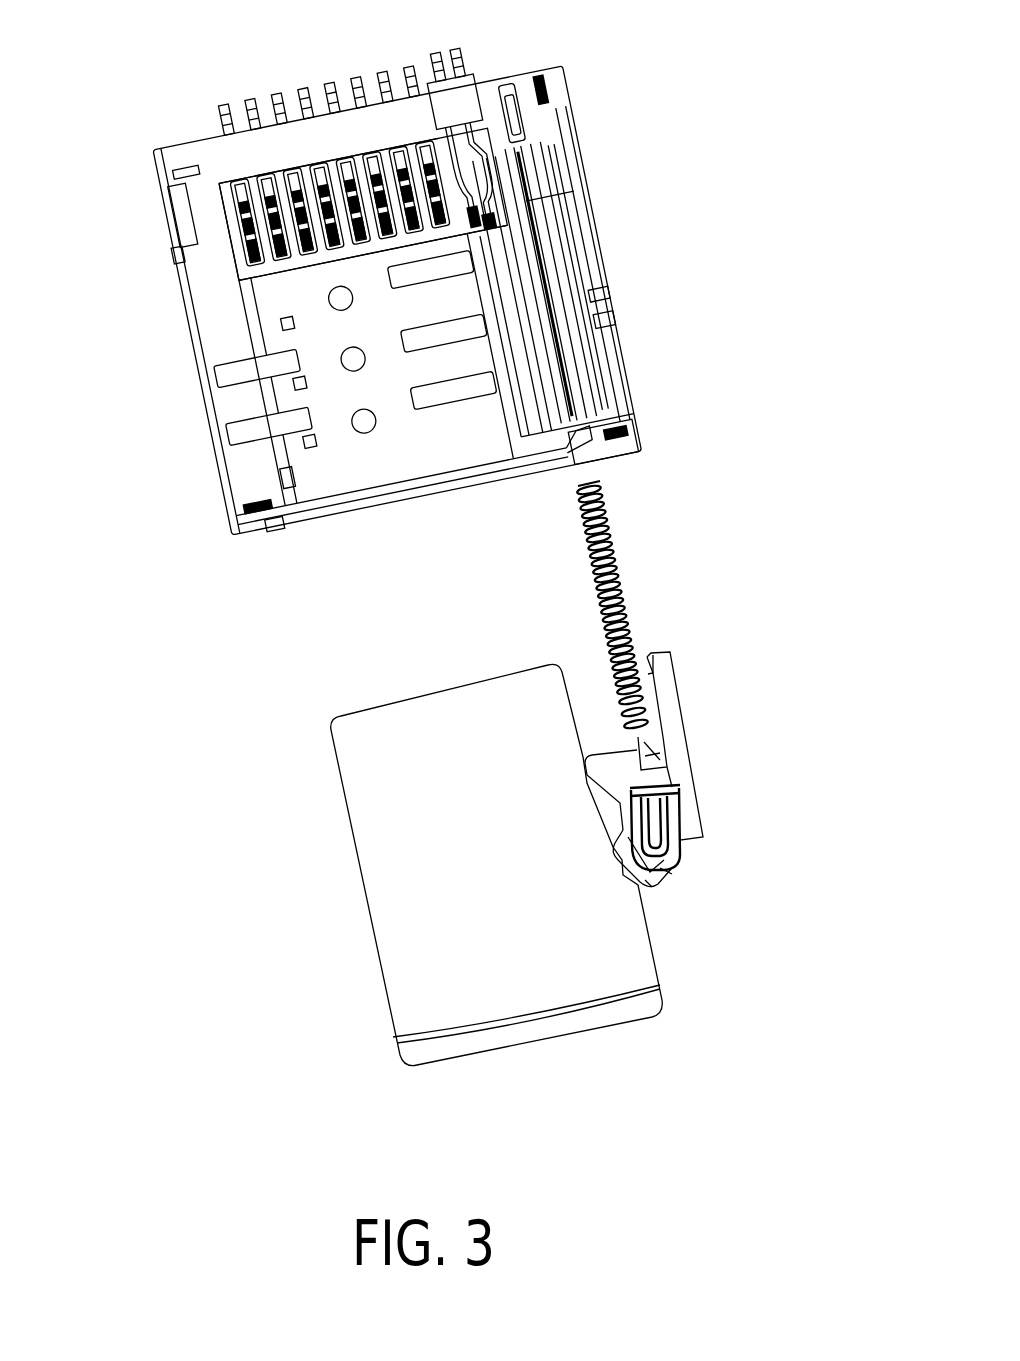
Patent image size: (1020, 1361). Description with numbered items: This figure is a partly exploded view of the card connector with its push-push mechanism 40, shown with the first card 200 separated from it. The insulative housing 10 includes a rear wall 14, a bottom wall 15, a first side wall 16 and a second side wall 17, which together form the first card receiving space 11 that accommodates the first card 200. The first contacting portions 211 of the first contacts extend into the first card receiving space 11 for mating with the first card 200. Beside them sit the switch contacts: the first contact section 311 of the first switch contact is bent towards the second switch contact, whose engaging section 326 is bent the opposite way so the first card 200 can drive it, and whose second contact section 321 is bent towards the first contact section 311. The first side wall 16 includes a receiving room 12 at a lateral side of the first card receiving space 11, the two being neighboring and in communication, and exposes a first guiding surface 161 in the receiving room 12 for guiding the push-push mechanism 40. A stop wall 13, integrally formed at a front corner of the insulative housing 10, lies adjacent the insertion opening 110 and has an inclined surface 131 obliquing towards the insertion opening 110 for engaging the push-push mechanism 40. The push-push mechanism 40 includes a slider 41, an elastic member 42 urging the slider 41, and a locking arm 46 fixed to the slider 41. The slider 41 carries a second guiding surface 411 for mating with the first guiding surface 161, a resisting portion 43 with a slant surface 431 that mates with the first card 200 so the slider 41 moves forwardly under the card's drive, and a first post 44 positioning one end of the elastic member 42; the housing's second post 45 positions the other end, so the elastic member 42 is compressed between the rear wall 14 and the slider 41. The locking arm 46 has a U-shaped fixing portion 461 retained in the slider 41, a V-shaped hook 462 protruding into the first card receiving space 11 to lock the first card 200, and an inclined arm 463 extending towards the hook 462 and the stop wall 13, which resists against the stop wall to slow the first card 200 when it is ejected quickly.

The insulative housing 10 is at (217, 265).
The first card receiving space 11 is at (357, 460).
The insertion opening 110 is at (496, 470).
The receiving room 12 is at (527, 205).
The stop wall 13 is at (580, 470).
The inclined surface 131 is at (603, 437).
The rear wall 14 is at (298, 140).
The bottom wall 15 is at (410, 457).
The first side wall 16 is at (600, 282).
The first guiding surface 161 is at (600, 322).
The second side wall 17 is at (243, 393).
The first contacting portion 211 is at (315, 290).
The first contact section 311 is at (500, 185).
The second contact section 321 is at (477, 223).
The engaging section 326 is at (480, 210).
The second post 45 is at (512, 125).
The push-push mechanism 40 is at (512, 709).
The slider 41 is at (665, 710).
The second guiding surface 411 is at (677, 697).
The elastic member 42 is at (620, 567).
The resisting portion 43 is at (607, 773).
The slant surface 431 is at (607, 797).
The first post 44 is at (637, 748).
The locking arm 46 is at (683, 853).
The U-shaped fixing portion 461 is at (650, 790).
The hook 462 is at (647, 882).
The inclined arm 463 is at (670, 873).
The first card 200 is at (593, 940).